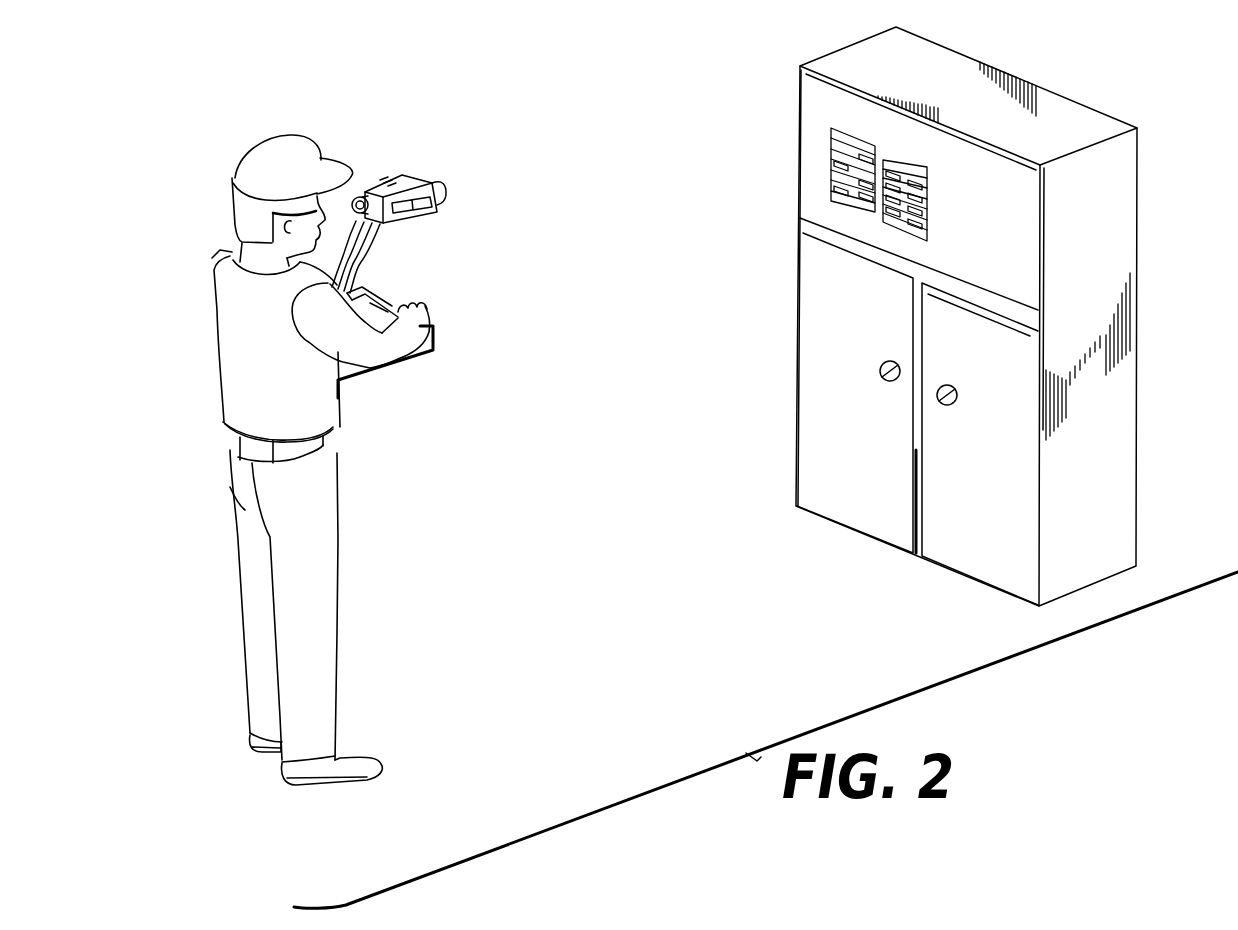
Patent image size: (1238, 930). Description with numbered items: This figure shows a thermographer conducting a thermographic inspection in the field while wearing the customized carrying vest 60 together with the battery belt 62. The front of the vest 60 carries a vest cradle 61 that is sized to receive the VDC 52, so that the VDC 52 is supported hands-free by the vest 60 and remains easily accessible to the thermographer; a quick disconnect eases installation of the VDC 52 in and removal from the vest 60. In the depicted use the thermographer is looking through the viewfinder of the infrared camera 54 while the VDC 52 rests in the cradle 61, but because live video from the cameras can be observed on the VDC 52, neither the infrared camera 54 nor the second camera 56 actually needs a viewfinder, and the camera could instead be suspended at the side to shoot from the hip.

The VDC 52 is at (377, 293).
The infrared camera 54 is at (430, 175).
The camera 56 is at (417, 218).
The carrying vest 60 is at (213, 340).
The vest cradle 61 is at (443, 328).
The battery belt 62 is at (223, 438).